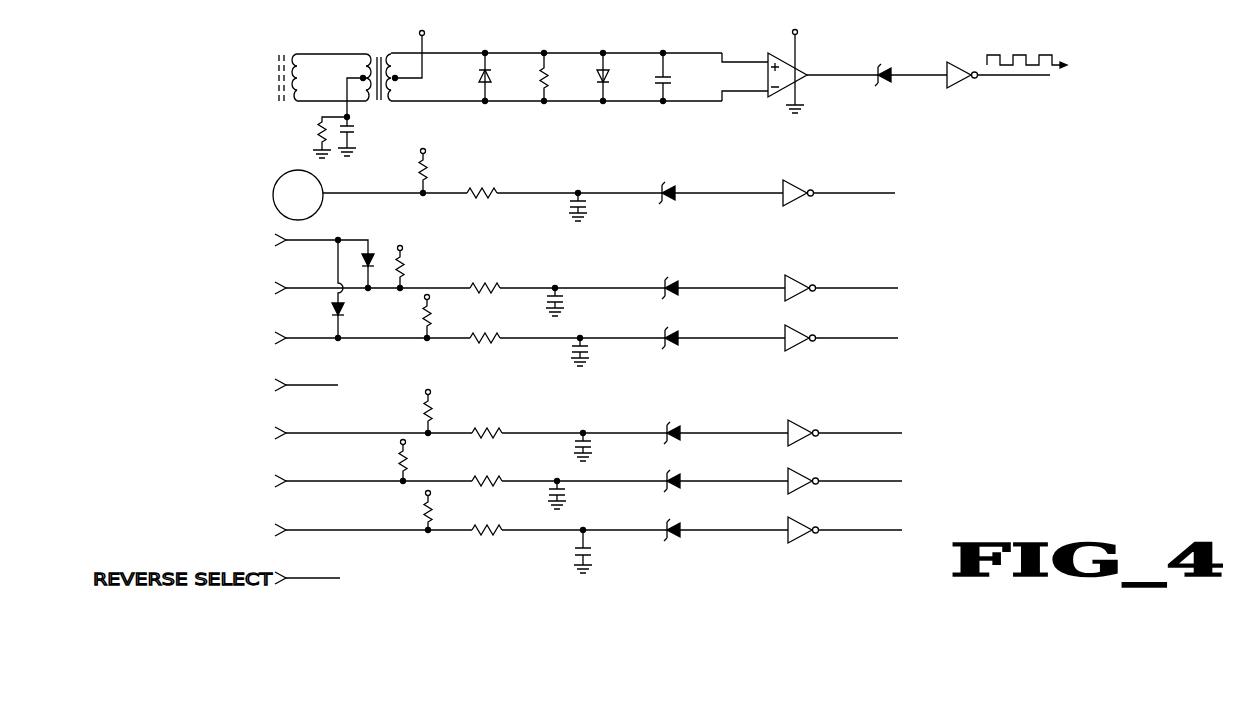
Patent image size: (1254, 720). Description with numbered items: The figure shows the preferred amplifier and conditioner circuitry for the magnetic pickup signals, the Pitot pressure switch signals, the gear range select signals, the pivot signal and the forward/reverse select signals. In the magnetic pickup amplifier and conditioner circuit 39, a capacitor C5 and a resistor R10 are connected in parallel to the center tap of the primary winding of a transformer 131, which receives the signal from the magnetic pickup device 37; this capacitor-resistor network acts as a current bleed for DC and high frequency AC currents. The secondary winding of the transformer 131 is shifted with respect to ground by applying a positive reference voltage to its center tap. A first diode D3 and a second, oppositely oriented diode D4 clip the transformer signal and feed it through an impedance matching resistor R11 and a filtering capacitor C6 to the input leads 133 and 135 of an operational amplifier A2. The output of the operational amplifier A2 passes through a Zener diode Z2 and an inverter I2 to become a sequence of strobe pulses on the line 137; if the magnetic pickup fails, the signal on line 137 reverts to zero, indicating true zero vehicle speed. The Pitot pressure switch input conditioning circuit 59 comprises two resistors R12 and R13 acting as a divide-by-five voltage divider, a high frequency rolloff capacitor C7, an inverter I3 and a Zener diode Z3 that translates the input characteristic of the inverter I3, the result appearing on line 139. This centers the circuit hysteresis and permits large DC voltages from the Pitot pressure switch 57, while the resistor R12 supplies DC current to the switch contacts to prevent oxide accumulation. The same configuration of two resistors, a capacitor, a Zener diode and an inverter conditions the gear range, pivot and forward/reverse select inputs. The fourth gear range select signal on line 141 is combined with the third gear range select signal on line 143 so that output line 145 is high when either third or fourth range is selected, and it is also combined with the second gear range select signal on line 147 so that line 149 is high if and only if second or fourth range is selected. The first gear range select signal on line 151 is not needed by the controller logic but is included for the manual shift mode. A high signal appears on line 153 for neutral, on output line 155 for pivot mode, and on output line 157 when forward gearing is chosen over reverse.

The magnetic pickup device 37 is at (283, 54).
The magnetic pickup amplifier and conditioner circuit 39 is at (585, 38).
The Pitot pressure switch 57 is at (321, 207).
The Pitot pressure switch input conditioning circuit 59 is at (580, 183).
The transformer 131 is at (381, 100).
The input lead of operational amplifier 133 is at (696, 52).
The input lead of operational amplifier 135 is at (686, 101).
The strobe pulse output line 137 is at (1023, 77).
The Pitot switch output line 139 is at (838, 192).
The fourth gear range select signal line 141 is at (328, 244).
The third gear range select signal line 143 is at (328, 292).
The third-or-fourth gear output line 145 is at (835, 284).
The second gear range select signal line 147 is at (328, 342).
The second-or-fourth gear output line 149 is at (836, 335).
The first gear range select signal line 151 is at (326, 388).
The neutral select output line 153 is at (850, 431).
The pivot select output line 155 is at (852, 479).
The forward/reverse select output line 157 is at (855, 528).
The resistor R10 is at (318, 136).
The capacitor C5 is at (356, 133).
The first diode D3 is at (478, 72).
The impedance matching resistor R11 is at (522, 77).
The second diode D4 is at (599, 74).
The filtering capacitor C6 is at (657, 82).
The operational amplifier A2 is at (810, 78).
The Zener diode Z2 is at (886, 68).
The inverter I2 is at (957, 88).
The resistor R12 is at (430, 172).
The resistor R13 is at (489, 199).
The high frequency rolloff capacitor C7 is at (568, 212).
The Zener diode Z3 is at (682, 201).
The inverter I3 is at (797, 208).